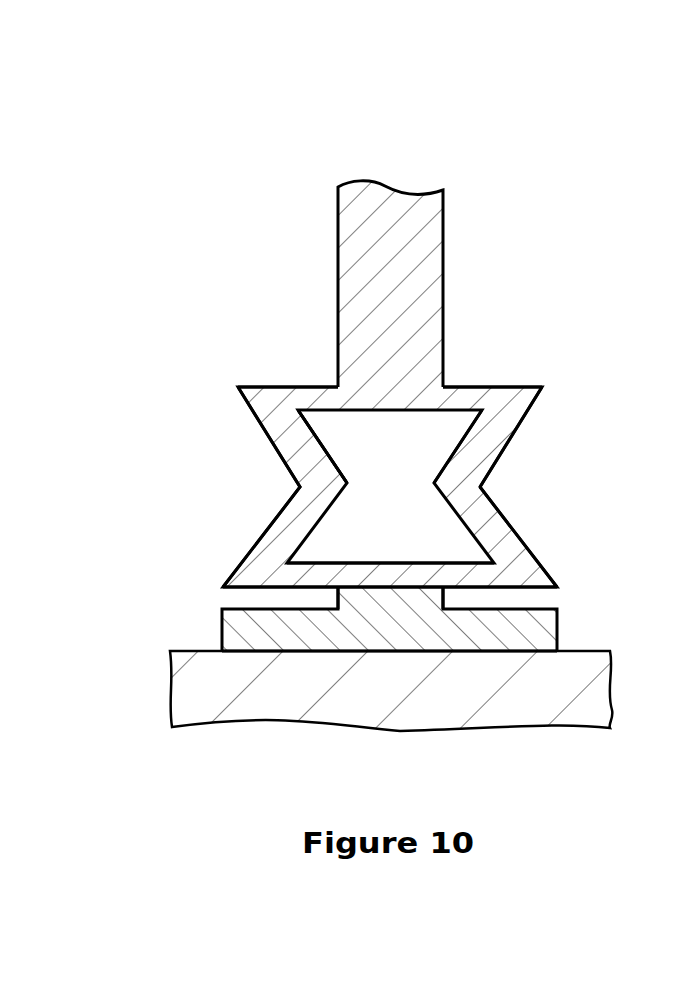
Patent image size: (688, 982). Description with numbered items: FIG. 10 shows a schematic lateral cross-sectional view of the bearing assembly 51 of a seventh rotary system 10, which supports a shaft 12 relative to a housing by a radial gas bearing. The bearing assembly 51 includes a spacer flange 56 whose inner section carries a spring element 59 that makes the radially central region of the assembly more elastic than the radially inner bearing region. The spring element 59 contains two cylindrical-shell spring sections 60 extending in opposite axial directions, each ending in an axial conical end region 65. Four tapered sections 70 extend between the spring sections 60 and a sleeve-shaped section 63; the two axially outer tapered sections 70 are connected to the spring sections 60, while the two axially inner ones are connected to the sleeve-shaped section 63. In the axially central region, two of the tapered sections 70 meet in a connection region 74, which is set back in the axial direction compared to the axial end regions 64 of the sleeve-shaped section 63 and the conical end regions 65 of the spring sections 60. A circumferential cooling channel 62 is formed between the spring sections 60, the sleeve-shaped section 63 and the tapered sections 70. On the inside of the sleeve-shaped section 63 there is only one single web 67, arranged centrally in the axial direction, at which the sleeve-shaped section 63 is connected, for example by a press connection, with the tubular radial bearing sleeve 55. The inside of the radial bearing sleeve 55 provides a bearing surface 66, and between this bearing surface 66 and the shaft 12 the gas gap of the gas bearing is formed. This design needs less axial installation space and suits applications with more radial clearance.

The device 10 is at (184, 122).
The bearing assembly 51 is at (190, 366).
The spacer flange 56 is at (423, 283).
The spring element 59 is at (535, 486).
The cylindrical-shell spring sections 60 is at (293, 399).
The axial conical end region 65 is at (533, 388).
The tapered sections 70 is at (278, 430).
The cooling channel 62 is at (338, 438).
The connection region 74 is at (422, 470).
The axial end regions 64 is at (547, 572).
The sleeve-shaped section 63 is at (470, 580).
The radial bearing sleeve 55 is at (540, 635).
The web 67 is at (410, 600).
The bearing surface 66 is at (367, 651).
The shaft 12 is at (587, 690).